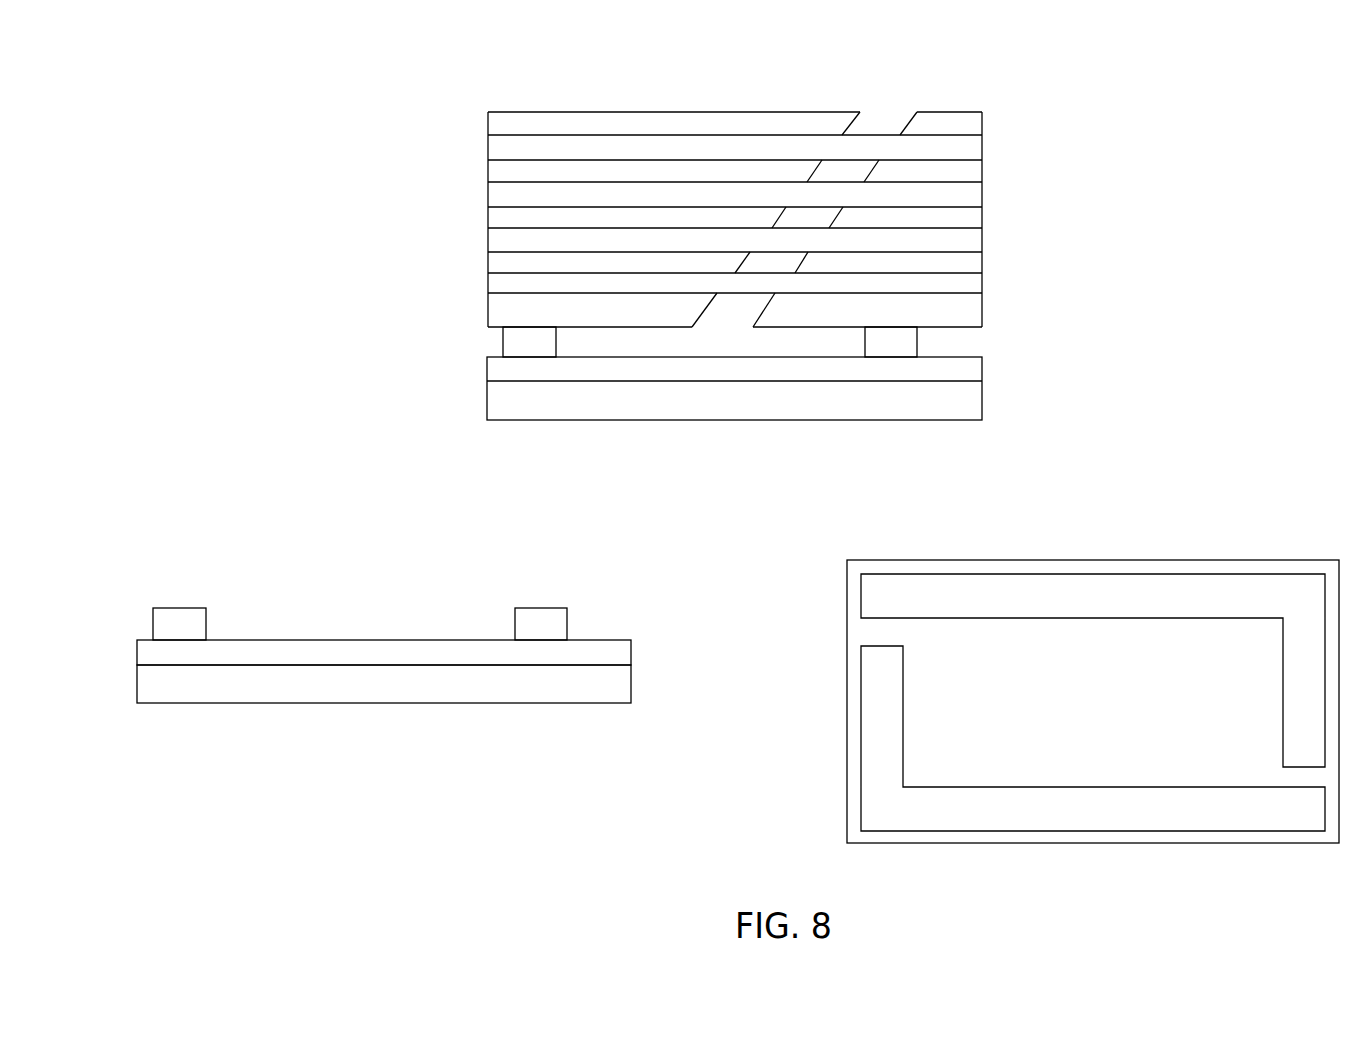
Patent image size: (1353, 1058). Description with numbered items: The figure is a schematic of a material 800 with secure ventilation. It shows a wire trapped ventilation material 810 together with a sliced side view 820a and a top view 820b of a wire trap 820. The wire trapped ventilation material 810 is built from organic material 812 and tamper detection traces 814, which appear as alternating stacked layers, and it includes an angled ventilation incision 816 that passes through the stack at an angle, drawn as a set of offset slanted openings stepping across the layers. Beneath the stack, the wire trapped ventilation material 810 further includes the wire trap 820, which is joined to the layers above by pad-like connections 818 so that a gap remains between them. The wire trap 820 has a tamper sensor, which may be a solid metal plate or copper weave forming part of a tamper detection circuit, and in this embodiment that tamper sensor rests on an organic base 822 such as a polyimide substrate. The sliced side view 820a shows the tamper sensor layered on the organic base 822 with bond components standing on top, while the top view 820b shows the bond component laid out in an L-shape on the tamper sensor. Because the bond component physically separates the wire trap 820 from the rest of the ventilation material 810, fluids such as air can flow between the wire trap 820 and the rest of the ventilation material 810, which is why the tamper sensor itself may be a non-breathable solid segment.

The material with secure ventilation 800 is at (180, 84).
The wire trapped ventilation material 810 is at (698, 193).
The organic material 812 is at (970, 126).
The tamper detection traces 814 is at (972, 243).
The angled ventilation incision 816 is at (881, 111).
The connection pads 818 is at (513, 341).
The wire trap 820 is at (992, 325).
The sliced side view 820a is at (381, 616).
The top view 820b is at (1047, 671).
The organic base 822 is at (620, 686).